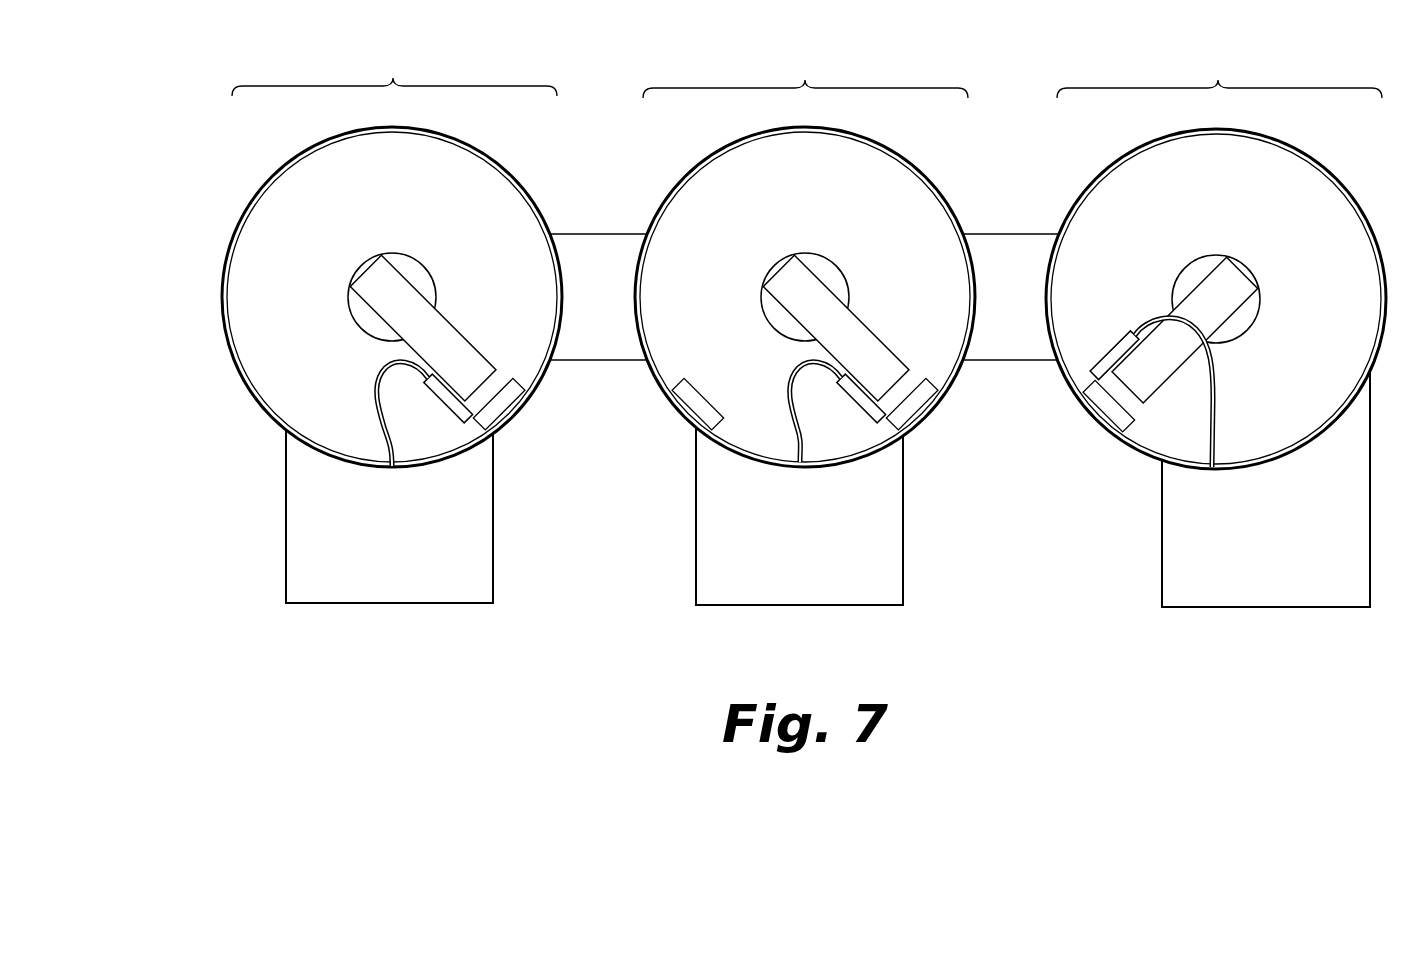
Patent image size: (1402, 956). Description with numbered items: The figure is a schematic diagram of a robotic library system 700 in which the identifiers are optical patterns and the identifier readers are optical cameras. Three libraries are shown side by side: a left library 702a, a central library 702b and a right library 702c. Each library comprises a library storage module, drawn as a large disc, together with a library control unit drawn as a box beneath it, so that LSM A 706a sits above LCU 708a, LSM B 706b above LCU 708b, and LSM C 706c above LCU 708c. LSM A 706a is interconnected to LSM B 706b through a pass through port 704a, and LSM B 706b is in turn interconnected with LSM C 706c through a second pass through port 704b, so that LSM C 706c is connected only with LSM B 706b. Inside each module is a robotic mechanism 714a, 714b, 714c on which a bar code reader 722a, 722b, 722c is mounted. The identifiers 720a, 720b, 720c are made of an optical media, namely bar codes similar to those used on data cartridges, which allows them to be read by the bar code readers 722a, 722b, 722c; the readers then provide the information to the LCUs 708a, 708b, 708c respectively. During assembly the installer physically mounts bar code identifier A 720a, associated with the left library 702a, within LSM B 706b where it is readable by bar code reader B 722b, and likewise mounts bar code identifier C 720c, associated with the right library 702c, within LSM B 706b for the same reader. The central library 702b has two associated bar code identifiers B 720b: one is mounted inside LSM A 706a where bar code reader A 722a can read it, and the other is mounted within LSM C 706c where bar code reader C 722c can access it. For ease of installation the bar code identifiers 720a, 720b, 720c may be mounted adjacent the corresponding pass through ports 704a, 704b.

The robotic library system 700 is at (198, 173).
The left library 702a is at (371, 322).
The central library 702b is at (781, 324).
The right library 702c is at (1216, 332).
The pass through port 704a is at (602, 247).
The pass through port 704b is at (1015, 250).
The LSM A 706a is at (418, 186).
The LSM B 706b is at (830, 188).
The LSM C 706c is at (1242, 190).
The LCU 708a is at (292, 548).
The LCU 708b is at (702, 552).
The LCU 708c is at (1172, 572).
The robotic mechanism 714a is at (368, 257).
The robotic mechanism 714b is at (778, 258).
The robotic mechanism 714c is at (1237, 260).
The bar code identifier A 720a is at (668, 405).
The bar code identifier B 720b is at (520, 400).
The bar code identifier C 720c is at (937, 403).
The bar code reader A 722a is at (442, 402).
The bar code reader B 722b is at (853, 403).
The bar code reader C 722c is at (1102, 357).